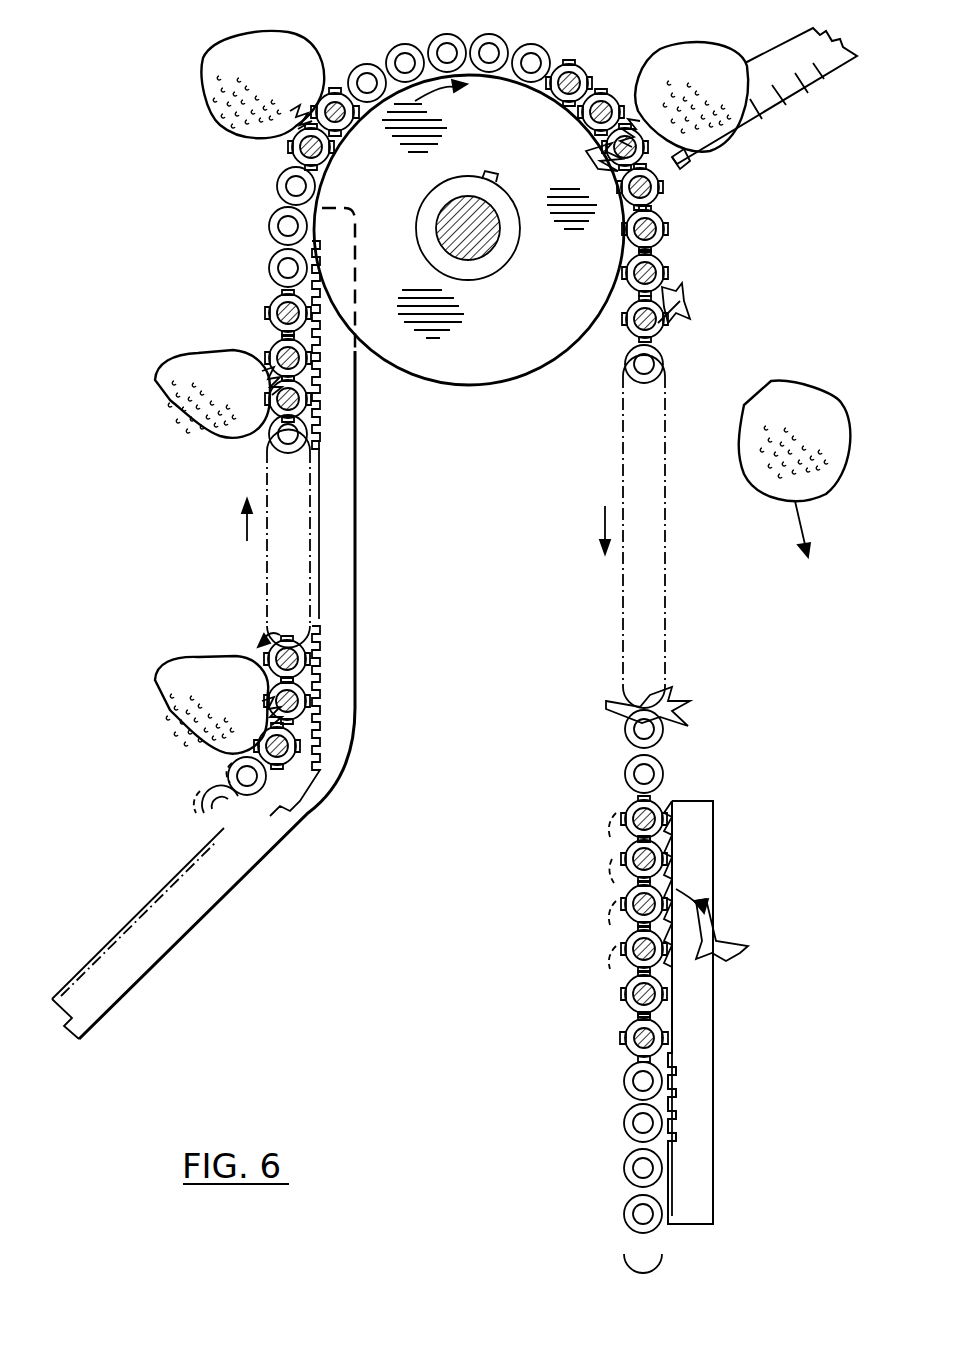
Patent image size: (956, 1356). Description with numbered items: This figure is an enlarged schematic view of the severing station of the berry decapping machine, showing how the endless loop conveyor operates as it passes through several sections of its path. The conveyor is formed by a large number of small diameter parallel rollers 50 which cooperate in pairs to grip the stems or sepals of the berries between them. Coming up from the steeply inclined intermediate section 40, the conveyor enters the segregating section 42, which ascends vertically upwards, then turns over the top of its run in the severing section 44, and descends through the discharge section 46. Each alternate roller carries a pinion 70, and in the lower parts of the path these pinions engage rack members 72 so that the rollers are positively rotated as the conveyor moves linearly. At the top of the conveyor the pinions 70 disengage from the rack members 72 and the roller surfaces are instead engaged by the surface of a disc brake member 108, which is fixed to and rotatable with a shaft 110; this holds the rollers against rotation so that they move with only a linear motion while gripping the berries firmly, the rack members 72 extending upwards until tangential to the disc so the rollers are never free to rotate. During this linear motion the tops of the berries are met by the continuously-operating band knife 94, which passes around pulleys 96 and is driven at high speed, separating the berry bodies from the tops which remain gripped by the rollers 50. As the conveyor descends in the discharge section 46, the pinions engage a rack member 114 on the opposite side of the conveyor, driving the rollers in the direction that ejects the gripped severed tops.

The intermediate section 40 is at (83, 798).
The segregating section 42 is at (174, 236).
The severing section 44 is at (600, 59).
The discharge section 46 is at (730, 610).
The rollers 50 is at (657, 191).
The pinion 70 is at (302, 411).
The rack members 72 is at (276, 813).
The band knife 94 is at (666, 159).
The pulleys 96 is at (792, 73).
The disc brake member 108 is at (494, 358).
The shaft 110 is at (476, 244).
The rack member 114 is at (697, 829).